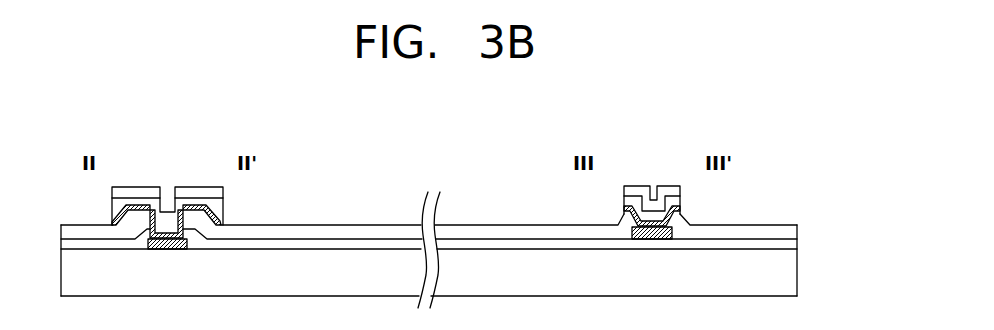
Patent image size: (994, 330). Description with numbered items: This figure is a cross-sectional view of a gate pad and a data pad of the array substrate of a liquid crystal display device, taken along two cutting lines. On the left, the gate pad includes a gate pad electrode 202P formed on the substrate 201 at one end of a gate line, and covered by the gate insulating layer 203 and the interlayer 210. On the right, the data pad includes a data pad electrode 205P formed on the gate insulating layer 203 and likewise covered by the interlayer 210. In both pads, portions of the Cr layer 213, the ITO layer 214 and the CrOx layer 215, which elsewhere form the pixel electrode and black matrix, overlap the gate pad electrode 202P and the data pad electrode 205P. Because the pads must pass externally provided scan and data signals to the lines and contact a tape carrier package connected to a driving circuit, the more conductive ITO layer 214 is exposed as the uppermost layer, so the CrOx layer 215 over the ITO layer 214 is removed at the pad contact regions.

The substrate 201 is at (783, 281).
The gate pad electrode 202P is at (172, 250).
The gate insulating layer 203 is at (785, 246).
The data pad electrode 205P is at (654, 239).
The interlayer 210 is at (785, 232).
The Cr layer 213 is at (112, 222).
The ITO layer 214 is at (223, 212).
The CrOx layer 215 is at (223, 191).